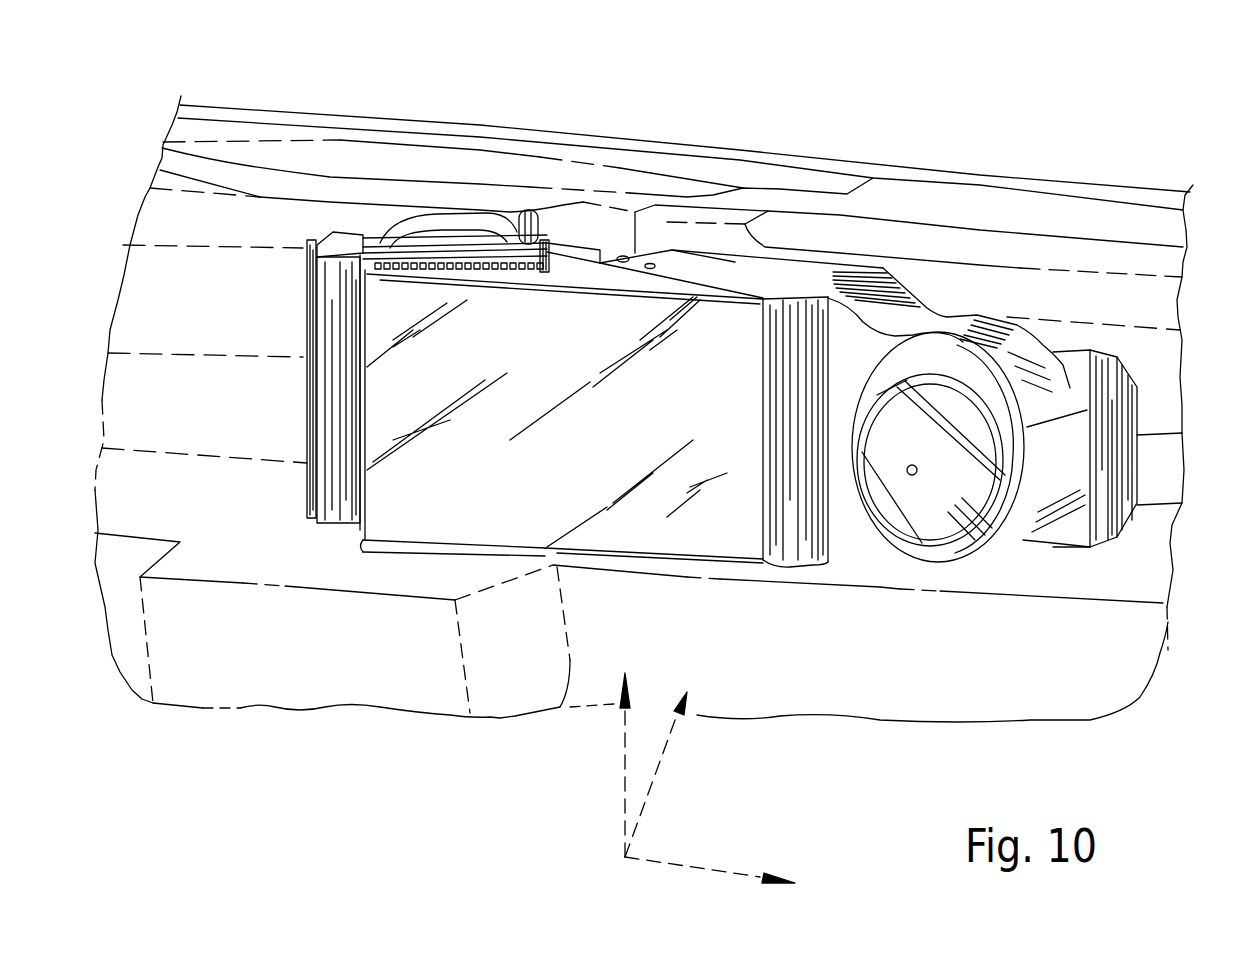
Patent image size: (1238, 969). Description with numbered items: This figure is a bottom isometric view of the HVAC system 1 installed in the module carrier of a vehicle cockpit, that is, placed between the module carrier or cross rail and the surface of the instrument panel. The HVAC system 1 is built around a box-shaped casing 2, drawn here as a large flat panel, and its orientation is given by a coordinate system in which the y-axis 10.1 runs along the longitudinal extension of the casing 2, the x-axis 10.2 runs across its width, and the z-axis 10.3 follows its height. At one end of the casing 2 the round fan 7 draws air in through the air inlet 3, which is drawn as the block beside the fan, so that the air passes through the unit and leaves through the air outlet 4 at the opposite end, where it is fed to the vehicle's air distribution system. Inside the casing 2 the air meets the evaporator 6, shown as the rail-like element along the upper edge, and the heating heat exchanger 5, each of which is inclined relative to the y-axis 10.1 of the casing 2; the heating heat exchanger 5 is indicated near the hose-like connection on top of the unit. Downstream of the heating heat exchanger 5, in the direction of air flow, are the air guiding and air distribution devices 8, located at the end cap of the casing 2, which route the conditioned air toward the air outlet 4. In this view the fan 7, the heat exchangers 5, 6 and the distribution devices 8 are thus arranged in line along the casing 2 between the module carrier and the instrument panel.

The HVAC system 1 is at (290, 737).
The casing 2 is at (728, 542).
The air inlet 3 is at (1085, 340).
The air outlet 4 is at (325, 288).
The heating heat exchanger 5 is at (495, 252).
The evaporator 6 is at (733, 280).
The fan 7 is at (1003, 340).
The air guiding and air distribution devices 8 is at (347, 245).
The y-axis 10.1 is at (685, 863).
The x-axis 10.2 is at (627, 780).
The z-axis 10.3 is at (658, 772).